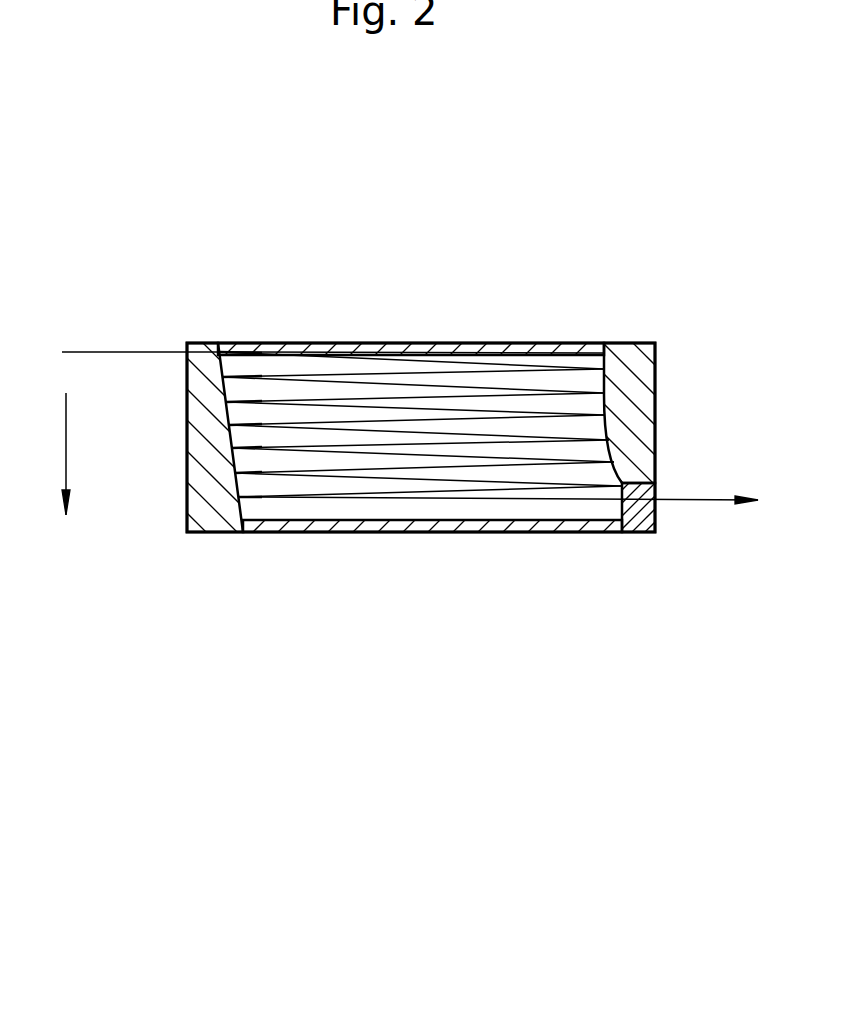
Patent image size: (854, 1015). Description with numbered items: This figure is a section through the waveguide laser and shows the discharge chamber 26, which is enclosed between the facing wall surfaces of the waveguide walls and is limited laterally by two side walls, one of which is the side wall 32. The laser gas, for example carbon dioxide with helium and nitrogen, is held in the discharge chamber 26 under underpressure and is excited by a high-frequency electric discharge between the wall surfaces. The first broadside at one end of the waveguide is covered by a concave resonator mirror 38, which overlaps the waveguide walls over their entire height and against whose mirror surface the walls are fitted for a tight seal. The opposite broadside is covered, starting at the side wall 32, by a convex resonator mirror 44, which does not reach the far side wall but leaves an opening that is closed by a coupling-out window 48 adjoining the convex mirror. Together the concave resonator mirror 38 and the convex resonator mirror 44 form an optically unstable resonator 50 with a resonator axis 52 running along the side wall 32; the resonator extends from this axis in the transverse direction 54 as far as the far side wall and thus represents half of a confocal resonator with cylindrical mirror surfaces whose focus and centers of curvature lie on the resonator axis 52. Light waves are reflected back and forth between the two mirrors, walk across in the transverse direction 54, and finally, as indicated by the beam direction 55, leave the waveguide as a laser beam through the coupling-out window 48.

The discharge chamber 26 is at (355, 505).
The side wall 32 is at (457, 347).
The concave resonator mirror 38 is at (210, 528).
The convex resonator mirror 44 is at (632, 356).
The coupling-out window 48 is at (650, 533).
The optically unstable resonator 50 is at (420, 330).
The resonator axis 52 is at (85, 352).
The transverse direction 54 is at (66, 480).
The beam direction 55 is at (475, 497).